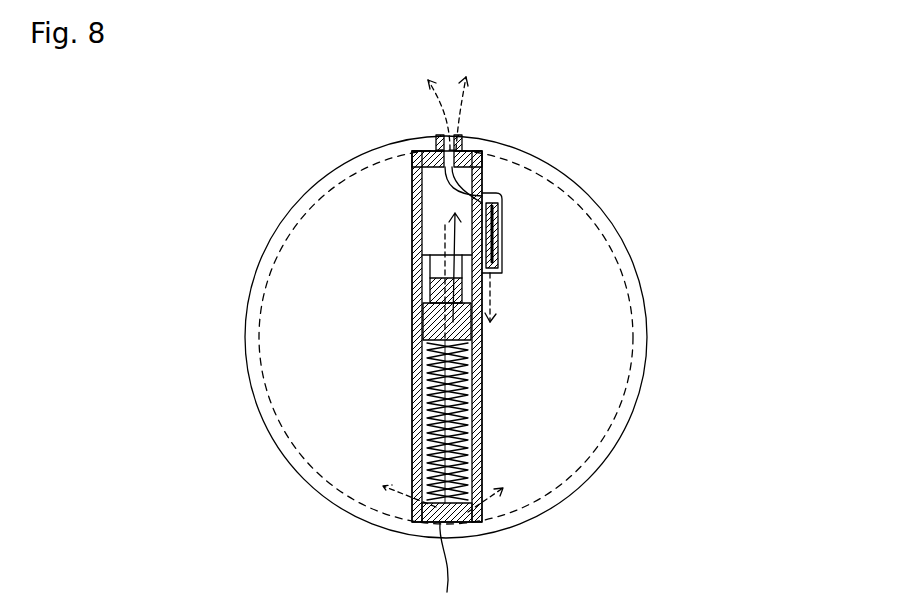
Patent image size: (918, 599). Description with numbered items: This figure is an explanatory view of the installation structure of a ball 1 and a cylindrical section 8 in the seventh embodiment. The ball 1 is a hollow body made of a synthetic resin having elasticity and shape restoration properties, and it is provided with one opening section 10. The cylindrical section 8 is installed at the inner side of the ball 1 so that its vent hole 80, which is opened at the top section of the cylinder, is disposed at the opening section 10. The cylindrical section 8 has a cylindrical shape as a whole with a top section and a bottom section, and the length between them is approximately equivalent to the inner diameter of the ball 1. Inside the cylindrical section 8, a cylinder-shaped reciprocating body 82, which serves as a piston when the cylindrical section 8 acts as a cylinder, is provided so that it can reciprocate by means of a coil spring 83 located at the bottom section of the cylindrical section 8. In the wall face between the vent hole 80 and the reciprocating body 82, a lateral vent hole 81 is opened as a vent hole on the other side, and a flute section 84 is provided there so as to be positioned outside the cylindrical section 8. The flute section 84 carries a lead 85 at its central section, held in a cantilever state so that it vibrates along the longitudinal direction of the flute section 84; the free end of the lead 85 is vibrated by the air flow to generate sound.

The ball 1 is at (610, 455).
The cylindrical section 8 is at (410, 200).
The opening section 10 is at (435, 136).
The vent hole 80 is at (468, 137).
The lateral vent hole 81 is at (497, 202).
The reciprocating body 82 is at (433, 268).
The coil spring 83 is at (430, 423).
The flute section 84 is at (500, 271).
The lead 85 is at (500, 242).